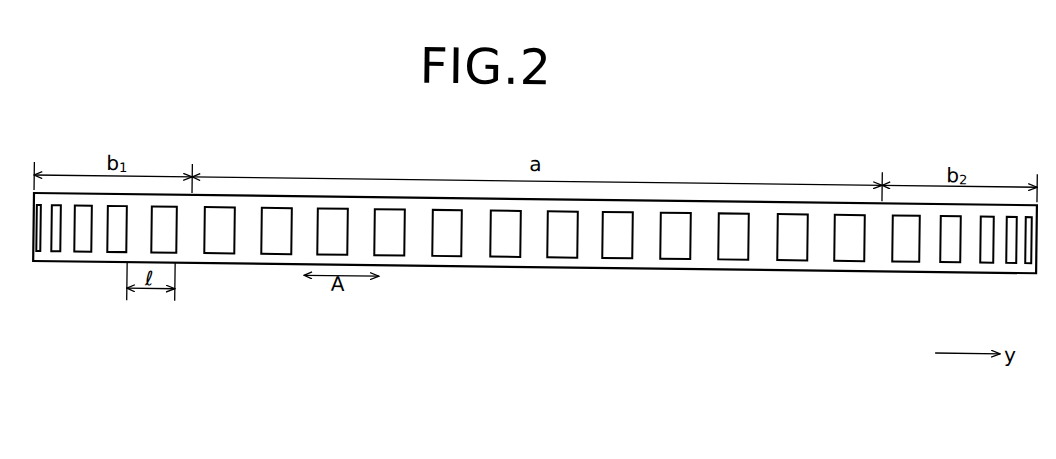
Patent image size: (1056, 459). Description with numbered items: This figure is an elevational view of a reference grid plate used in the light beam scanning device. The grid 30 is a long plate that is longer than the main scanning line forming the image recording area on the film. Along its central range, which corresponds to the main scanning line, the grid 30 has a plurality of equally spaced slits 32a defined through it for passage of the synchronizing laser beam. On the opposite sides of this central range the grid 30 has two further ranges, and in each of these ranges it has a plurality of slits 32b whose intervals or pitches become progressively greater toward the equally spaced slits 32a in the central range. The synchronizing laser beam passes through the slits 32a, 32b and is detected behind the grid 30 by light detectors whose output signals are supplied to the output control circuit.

The grid 30 is at (482, 252).
The equally spaced slits 32a is at (677, 239).
The slits 32b is at (85, 239).